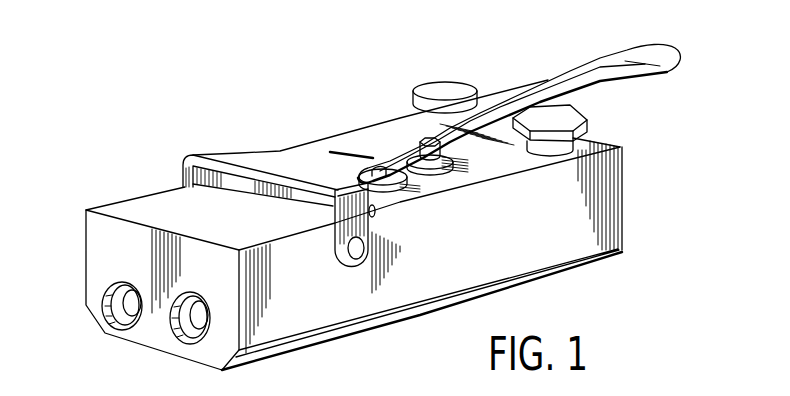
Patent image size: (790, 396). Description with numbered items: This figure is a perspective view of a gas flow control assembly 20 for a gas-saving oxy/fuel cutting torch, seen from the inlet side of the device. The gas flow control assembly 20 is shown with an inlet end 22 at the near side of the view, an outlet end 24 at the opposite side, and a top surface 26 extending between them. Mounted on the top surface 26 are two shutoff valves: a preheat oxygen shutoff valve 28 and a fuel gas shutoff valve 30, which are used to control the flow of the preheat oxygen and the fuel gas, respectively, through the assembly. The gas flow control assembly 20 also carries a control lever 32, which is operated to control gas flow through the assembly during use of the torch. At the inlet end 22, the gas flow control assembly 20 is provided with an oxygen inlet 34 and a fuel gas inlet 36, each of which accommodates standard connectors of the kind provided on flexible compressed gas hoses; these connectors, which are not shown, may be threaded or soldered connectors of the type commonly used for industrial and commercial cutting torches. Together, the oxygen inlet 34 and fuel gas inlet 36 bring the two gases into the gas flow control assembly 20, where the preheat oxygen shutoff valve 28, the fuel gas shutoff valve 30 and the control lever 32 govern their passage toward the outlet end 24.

The gas flow control assembly 20 is at (372, 205).
The inlet end 22 is at (97, 253).
The outlet end 24 is at (627, 208).
The top surface 26 is at (497, 162).
The preheat oxygen shutoff valve 28 is at (573, 107).
The fuel gas shutoff valve 30 is at (430, 88).
The control lever 32 is at (580, 70).
The oxygen inlet 34 is at (187, 343).
The fuel gas inlet 36 is at (113, 323).